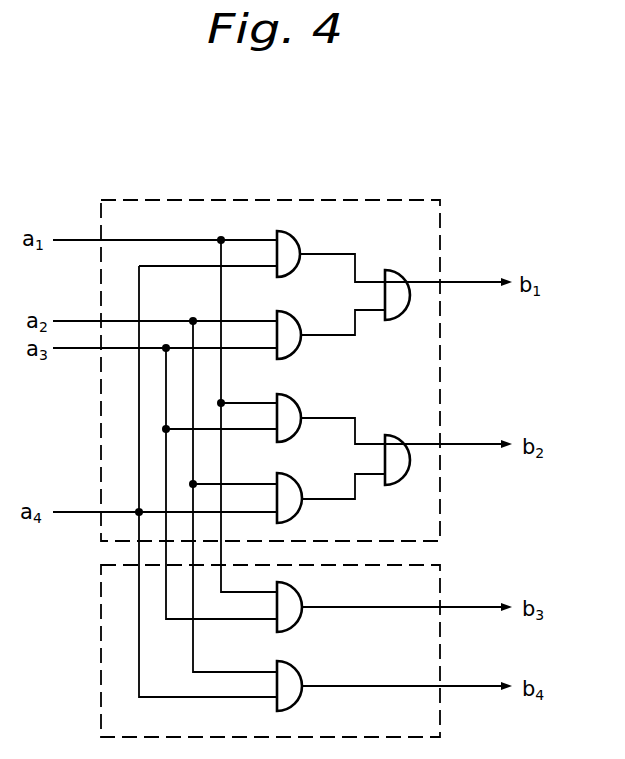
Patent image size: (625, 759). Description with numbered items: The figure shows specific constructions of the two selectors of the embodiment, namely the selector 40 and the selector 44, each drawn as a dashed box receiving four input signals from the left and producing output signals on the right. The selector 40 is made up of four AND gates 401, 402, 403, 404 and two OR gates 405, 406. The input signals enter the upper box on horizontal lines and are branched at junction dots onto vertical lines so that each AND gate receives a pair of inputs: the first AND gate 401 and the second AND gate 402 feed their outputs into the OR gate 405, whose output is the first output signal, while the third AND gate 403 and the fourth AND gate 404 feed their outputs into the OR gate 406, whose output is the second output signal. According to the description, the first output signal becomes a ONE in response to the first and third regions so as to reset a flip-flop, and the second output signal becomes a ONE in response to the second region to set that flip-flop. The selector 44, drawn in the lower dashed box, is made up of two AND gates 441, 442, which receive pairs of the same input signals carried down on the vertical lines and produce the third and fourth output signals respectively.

The selector 40 is at (408, 198).
The selector 44 is at (442, 590).
The AND gate 401 is at (300, 243).
The AND gate 402 is at (297, 320).
The AND gate 403 is at (295, 397).
The AND gate 404 is at (297, 478).
The OR gate 405 is at (401, 270).
The OR gate 406 is at (401, 435).
The AND gate 441 is at (299, 594).
The AND gate 442 is at (299, 670).